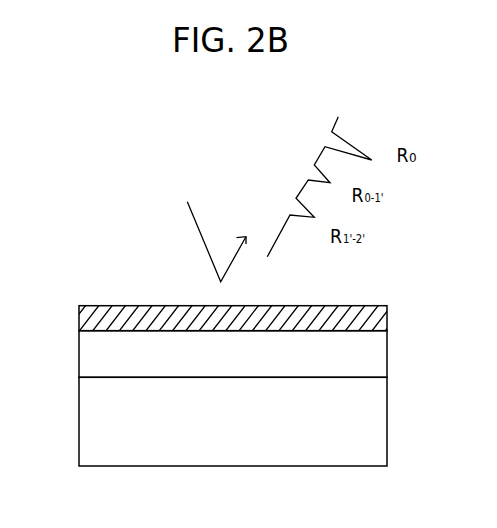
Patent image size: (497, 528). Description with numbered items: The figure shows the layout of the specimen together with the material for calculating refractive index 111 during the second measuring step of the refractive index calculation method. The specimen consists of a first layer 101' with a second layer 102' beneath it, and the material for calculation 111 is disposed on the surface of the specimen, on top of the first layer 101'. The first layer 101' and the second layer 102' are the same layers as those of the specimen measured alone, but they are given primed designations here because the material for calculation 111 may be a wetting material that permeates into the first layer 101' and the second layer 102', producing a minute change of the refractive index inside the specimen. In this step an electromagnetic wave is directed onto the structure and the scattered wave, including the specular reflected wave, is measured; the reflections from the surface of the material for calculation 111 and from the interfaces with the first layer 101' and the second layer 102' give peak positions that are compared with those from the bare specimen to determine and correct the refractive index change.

The material for calculating refractive index 111 is at (93, 308).
The first layer 101' is at (202, 350).
The second layer 102' is at (202, 421).